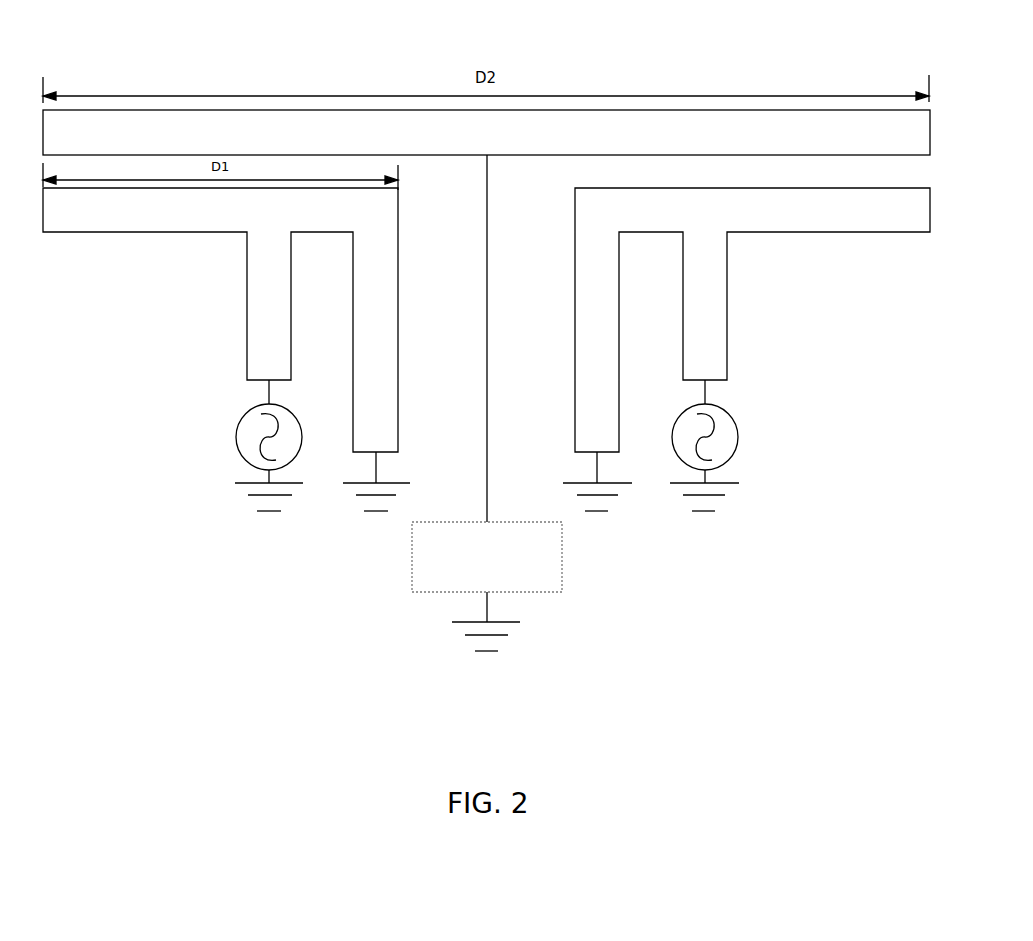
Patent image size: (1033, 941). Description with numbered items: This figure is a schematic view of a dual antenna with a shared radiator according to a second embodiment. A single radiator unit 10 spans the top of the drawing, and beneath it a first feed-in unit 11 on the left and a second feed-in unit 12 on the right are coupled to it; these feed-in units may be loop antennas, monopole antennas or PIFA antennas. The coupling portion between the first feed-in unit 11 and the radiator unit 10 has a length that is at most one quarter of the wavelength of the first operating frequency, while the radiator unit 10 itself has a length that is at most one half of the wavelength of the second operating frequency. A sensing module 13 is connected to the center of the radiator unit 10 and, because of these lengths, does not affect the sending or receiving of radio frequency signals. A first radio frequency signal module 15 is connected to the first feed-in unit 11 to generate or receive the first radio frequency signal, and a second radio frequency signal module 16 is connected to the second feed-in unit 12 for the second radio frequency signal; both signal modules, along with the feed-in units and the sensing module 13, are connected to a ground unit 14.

The radiator unit 10 is at (273, 138).
The first feed-in unit 11 is at (182, 222).
The second feed-in unit 12 is at (770, 217).
The sensing module 13 is at (547, 580).
The ground unit 14 is at (360, 502).
The first radio frequency signal module 15 is at (248, 447).
The second radio frequency signal module 16 is at (720, 448).